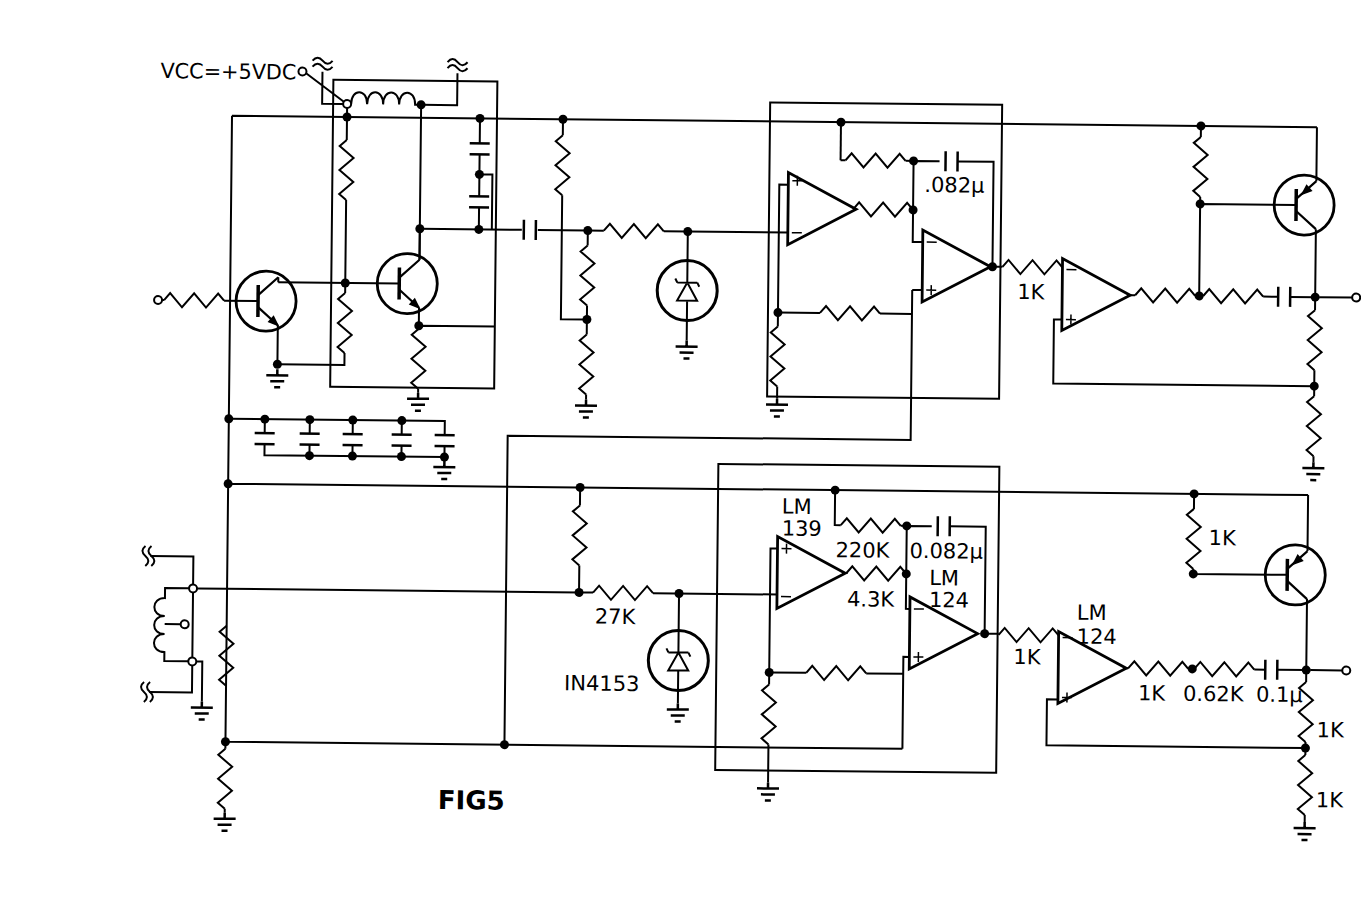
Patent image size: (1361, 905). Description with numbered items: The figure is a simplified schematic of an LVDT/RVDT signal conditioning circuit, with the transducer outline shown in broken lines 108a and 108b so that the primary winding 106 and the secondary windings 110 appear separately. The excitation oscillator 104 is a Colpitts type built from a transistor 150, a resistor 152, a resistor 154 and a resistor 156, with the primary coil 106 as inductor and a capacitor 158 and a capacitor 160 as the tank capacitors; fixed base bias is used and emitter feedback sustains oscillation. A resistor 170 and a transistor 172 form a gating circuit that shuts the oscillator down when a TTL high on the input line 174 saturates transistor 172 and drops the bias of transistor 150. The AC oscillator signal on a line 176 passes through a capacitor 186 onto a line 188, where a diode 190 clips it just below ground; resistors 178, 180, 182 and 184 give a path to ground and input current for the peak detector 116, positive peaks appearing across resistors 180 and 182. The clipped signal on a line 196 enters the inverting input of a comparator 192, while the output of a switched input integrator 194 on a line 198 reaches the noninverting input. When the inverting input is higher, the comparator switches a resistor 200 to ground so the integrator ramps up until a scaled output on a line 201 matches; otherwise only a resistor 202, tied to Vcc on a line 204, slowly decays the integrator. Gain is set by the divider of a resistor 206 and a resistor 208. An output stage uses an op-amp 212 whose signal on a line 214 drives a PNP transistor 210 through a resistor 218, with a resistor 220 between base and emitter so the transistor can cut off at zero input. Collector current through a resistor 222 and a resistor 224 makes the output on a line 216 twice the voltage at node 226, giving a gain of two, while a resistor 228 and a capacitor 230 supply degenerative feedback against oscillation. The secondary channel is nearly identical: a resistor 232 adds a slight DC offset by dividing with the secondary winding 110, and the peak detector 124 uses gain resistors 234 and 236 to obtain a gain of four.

The oscillator 104 is at (498, 98).
The primary winding 106 is at (382, 105).
The broken line outline of L/R VDT 108a is at (462, 83).
The broken line outline of L/R VDT 108b is at (154, 557).
The secondary windings 110 is at (160, 642).
The peak detector 116 is at (912, 98).
The peak detector 124 is at (895, 460).
The transistor 150 is at (398, 251).
The resistor 152 is at (372, 171).
The resistor 154 is at (366, 314).
The resistor 156 is at (448, 370).
The capacitor 158 is at (458, 146).
The capacitor 160 is at (458, 202).
The resistor 170 is at (222, 284).
The transistor 172 is at (282, 267).
The input line 174 is at (158, 310).
The line 176 is at (488, 230).
The resistor 178 is at (584, 219).
The resistor 180 is at (611, 275).
The resistor 182 is at (607, 368).
The resistor 184 is at (674, 222).
The capacitor 186 is at (527, 243).
The line 188 is at (610, 222).
The diode 190 is at (720, 290).
The comparator 192 is at (791, 250).
The switched input integrator 194 is at (926, 297).
The line 196 is at (727, 228).
The line 198 is at (903, 314).
The resistor 200 is at (878, 234).
The line 201 is at (782, 274).
The resistor 202 is at (896, 146).
The line 204 is at (834, 114).
The resistor 206 is at (799, 364).
The resistor 208 is at (886, 302).
The PNP transistor 210 is at (1278, 224).
The op-amp 212 is at (1090, 334).
The line 214 is at (1134, 266).
The line 216 is at (1336, 283).
The resistor 218 is at (1188, 280).
The resistor 220 is at (1222, 165).
The resistor 222 is at (1306, 357).
The resistor 224 is at (1306, 432).
The node 226 is at (1206, 365).
The resistor 228 is at (1253, 280).
The capacitor 230 is at (1288, 300).
The resistor 232 is at (550, 540).
The resistor 234 is at (770, 716).
The resistor 236 is at (836, 667).